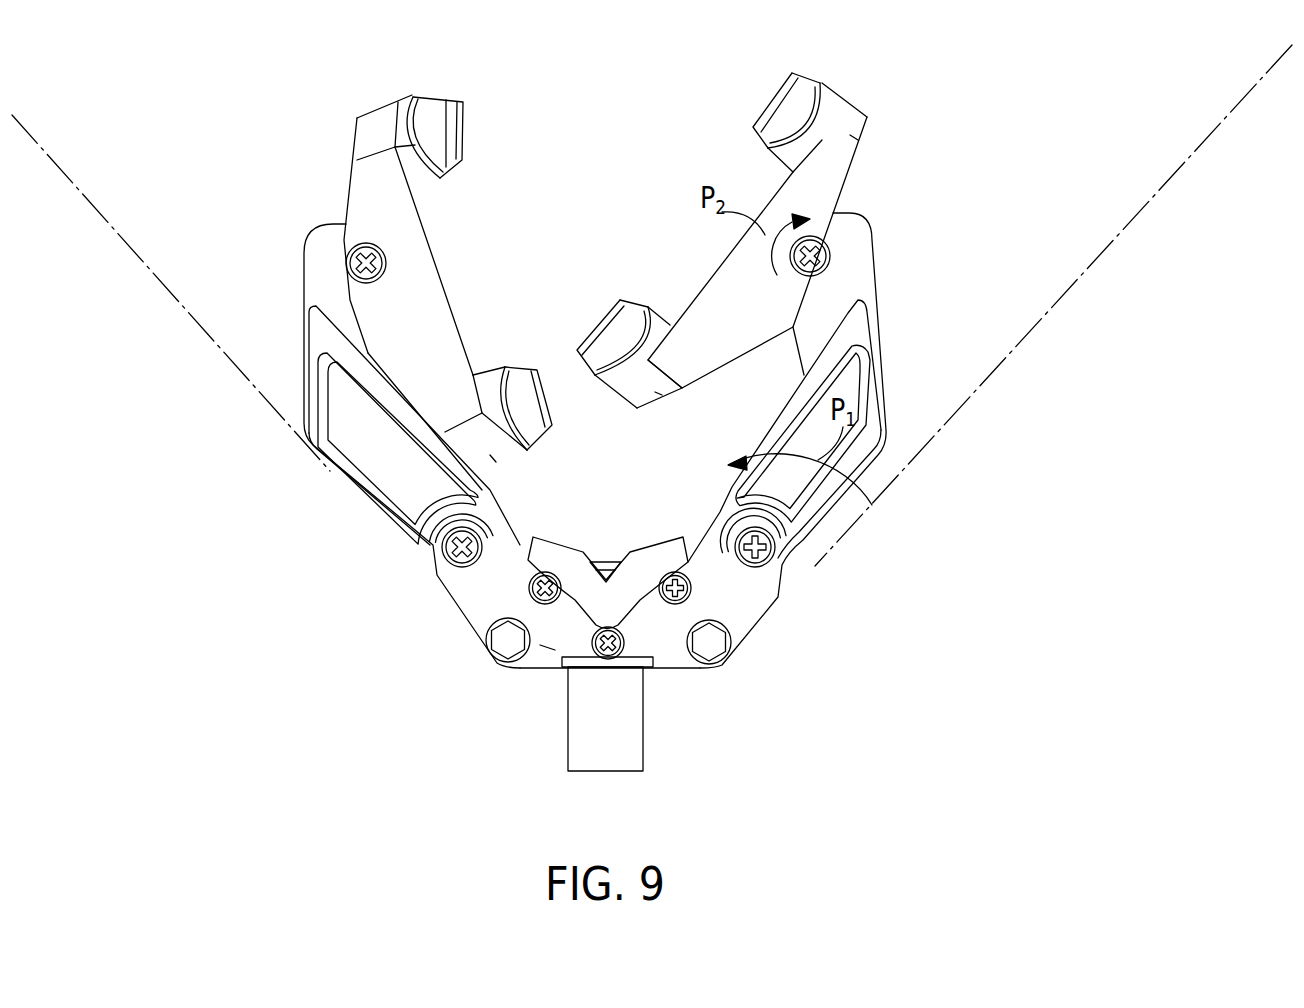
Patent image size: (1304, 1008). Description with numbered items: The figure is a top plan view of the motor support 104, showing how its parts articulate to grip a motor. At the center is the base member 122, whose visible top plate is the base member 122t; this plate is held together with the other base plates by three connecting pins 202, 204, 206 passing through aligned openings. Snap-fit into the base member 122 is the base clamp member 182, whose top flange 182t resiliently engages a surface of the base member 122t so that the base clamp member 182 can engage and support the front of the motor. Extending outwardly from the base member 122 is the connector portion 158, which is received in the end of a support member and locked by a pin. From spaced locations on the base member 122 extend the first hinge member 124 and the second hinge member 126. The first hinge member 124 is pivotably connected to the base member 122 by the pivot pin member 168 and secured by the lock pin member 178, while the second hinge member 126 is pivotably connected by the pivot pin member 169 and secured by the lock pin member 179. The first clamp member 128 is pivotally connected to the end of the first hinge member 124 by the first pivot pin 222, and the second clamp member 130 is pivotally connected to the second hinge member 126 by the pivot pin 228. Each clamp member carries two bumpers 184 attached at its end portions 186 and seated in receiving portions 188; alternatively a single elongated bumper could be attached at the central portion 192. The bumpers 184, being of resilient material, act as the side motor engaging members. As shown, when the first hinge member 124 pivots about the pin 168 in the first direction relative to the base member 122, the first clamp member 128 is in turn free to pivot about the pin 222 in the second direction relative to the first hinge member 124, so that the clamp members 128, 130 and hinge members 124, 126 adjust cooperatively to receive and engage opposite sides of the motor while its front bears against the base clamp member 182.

The motor support 104 is at (340, 568).
The base member 122 is at (820, 440).
The top base member 122t is at (547, 647).
The first hinge member 124 is at (855, 370).
The second hinge member 126 is at (355, 455).
The first clamp member 128 is at (832, 178).
The second clamp member 130 is at (387, 235).
The connector portion 158 is at (583, 745).
The pivot pin member 168 is at (775, 559).
The pivot pin member 169 is at (441, 545).
The lock pin member 178 is at (712, 650).
The lock pin member 179 is at (500, 640).
The base clamp member 182 is at (598, 621).
The top flange 182t is at (578, 607).
The bumpers 184 is at (437, 137).
The end portions 186 is at (378, 113).
The receiving portions 188 is at (398, 102).
The central portion 192 is at (425, 272).
The connecting pin 202 is at (690, 592).
The connecting pin 204 is at (627, 645).
The connecting pin 206 is at (527, 592).
The first pivot pin 222 is at (837, 252).
The pivot pin 228 is at (345, 262).